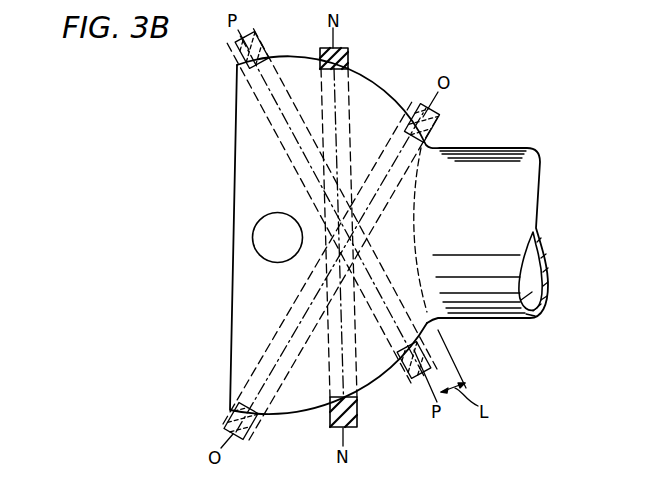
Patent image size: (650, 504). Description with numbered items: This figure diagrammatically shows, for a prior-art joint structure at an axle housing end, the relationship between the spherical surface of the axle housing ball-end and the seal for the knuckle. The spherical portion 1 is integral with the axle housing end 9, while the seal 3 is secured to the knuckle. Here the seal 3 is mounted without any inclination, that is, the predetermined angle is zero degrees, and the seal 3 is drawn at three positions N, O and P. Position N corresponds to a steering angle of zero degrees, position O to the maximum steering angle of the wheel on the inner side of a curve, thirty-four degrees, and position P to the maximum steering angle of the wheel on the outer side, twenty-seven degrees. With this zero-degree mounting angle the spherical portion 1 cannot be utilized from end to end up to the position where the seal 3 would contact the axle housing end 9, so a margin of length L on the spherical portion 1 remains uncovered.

The spherical portion 1 is at (373, 112).
The seal 3 is at (266, 44).
The axle housing end 9 is at (493, 172).